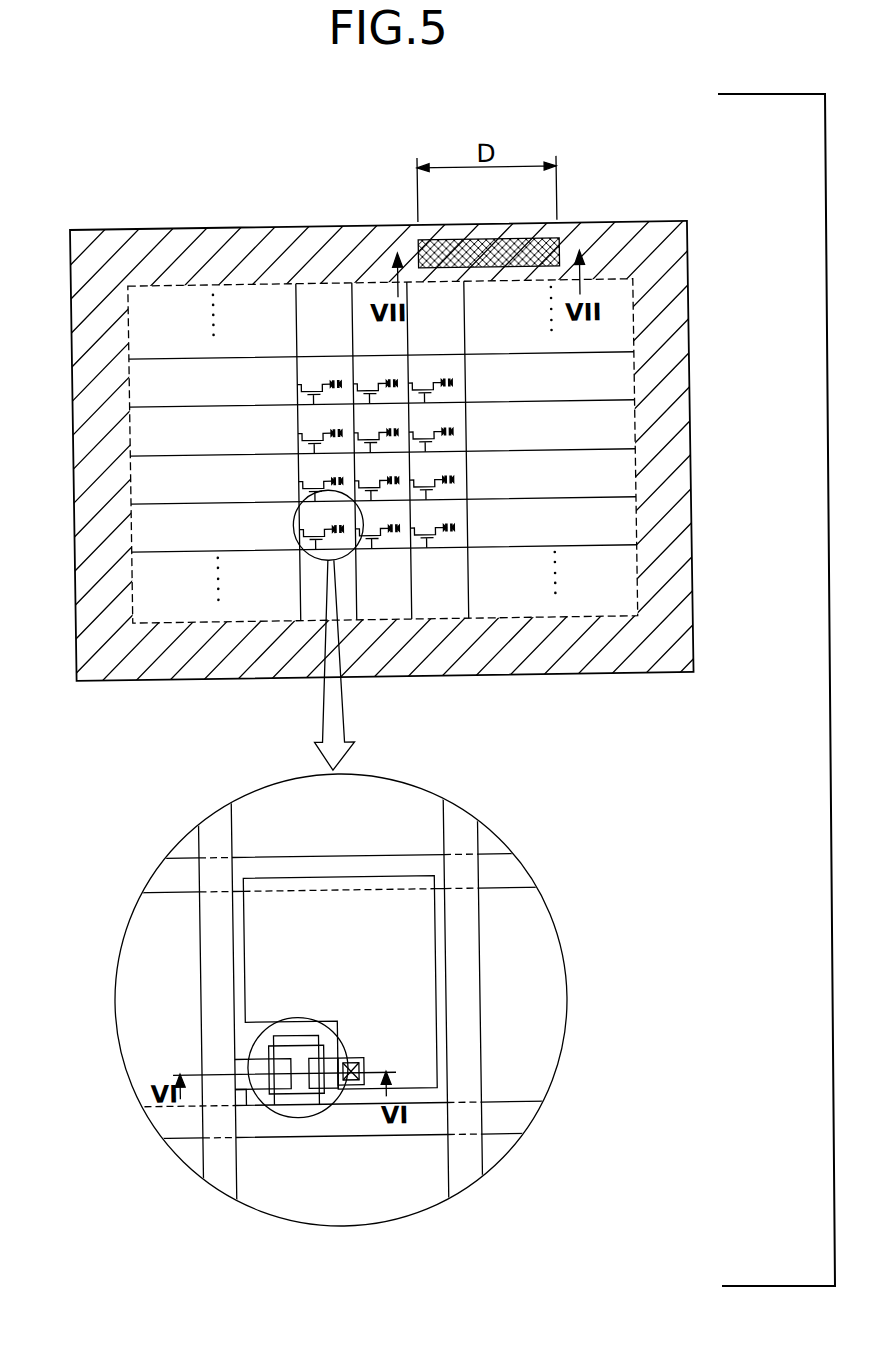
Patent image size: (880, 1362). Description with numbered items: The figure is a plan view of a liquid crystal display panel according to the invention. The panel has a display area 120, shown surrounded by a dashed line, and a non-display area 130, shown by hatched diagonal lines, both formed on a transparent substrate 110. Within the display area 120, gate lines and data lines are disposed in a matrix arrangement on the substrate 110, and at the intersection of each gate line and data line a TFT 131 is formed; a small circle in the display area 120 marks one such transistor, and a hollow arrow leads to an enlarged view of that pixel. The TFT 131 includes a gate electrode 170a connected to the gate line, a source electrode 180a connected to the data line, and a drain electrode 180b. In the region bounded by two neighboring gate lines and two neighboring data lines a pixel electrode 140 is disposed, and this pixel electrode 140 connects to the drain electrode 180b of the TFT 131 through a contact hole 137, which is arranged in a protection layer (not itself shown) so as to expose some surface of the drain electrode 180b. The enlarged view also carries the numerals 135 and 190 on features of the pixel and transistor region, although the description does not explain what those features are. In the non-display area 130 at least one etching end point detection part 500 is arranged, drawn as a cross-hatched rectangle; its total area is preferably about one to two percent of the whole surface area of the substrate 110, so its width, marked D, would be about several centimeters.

The transparent substrate 110 is at (590, 452).
The display area 120 is at (381, 403).
The non-display area 130 is at (624, 220).
The TFT 131 is at (275, 1118).
The storage electrode line 135 is at (343, 890).
The contact hole 137 is at (349, 1059).
The pixel electrode 140 is at (432, 1035).
The gate electrode 170a is at (297, 1104).
The source electrode 180a is at (250, 1067).
The drain electrode 180b is at (330, 1060).
The semiconductor layer 190 is at (295, 1040).
The etching end point detection part 500 is at (488, 227).